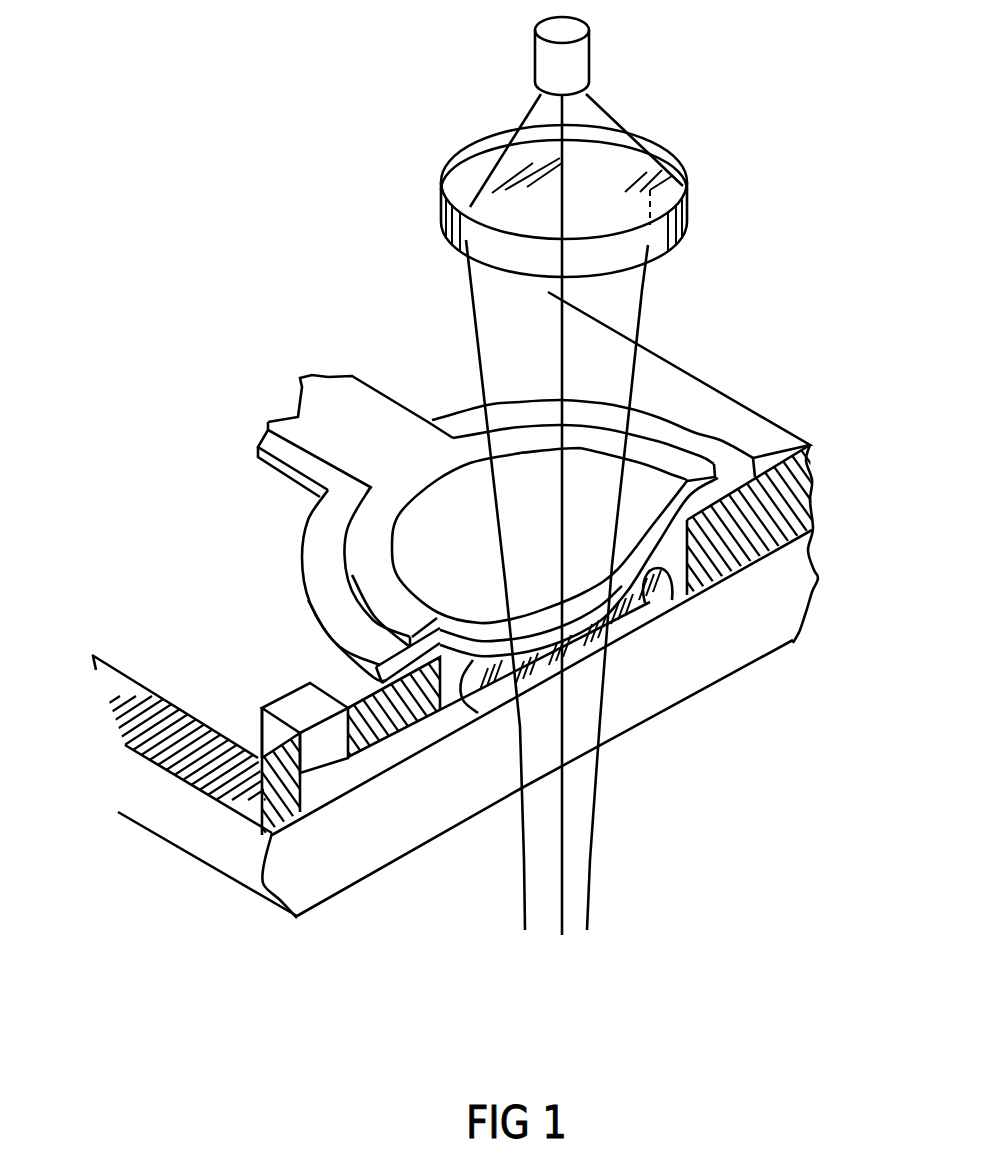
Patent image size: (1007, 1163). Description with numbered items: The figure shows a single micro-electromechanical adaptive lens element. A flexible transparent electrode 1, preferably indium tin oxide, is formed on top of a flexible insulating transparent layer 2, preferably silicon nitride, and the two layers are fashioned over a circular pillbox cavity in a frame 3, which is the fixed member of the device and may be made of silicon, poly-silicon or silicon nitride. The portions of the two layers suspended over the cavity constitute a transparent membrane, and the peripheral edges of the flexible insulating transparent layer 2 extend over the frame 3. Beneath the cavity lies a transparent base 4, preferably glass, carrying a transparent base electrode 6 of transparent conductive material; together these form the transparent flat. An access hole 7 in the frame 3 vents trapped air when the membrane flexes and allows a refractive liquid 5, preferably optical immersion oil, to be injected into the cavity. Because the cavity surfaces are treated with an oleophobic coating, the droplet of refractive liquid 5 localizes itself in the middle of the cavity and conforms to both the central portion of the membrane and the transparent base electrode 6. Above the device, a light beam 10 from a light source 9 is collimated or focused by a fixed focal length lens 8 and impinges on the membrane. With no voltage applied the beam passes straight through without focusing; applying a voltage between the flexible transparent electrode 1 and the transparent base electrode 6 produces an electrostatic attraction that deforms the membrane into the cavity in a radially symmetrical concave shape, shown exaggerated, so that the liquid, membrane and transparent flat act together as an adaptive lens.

The flexible transparent electrode 1 is at (665, 457).
The flexible insulating transparent layer 2 is at (733, 460).
The frame 3 is at (750, 520).
The transparent base 4 is at (751, 612).
The refractive liquid 5 is at (617, 635).
The transparent base electrode 6 is at (514, 678).
The access hole 7 is at (298, 702).
The fixed focal length lens 8 is at (694, 188).
The light source 9 is at (601, 46).
The light beam 10 is at (465, 300).